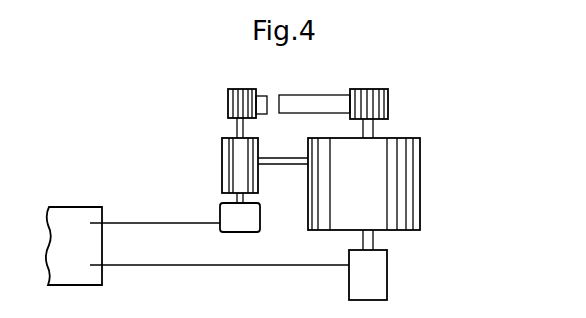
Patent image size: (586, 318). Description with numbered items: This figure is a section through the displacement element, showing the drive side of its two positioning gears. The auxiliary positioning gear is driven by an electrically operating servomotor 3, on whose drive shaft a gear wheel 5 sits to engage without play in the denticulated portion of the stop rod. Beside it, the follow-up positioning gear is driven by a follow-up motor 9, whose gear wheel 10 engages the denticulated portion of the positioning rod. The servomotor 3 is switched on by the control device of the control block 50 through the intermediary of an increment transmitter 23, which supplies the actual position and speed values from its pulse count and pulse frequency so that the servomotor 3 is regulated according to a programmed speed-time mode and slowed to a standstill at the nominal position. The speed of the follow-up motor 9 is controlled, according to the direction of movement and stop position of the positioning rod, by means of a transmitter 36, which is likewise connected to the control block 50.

The gear wheel 5 is at (234, 105).
The gear wheel 10 is at (380, 103).
The servomotor 3 is at (228, 167).
The increment transmitter 23 is at (230, 215).
The follow-up motor 9 is at (410, 180).
The transmitter 36 is at (378, 275).
The control block 50 is at (197, 246).